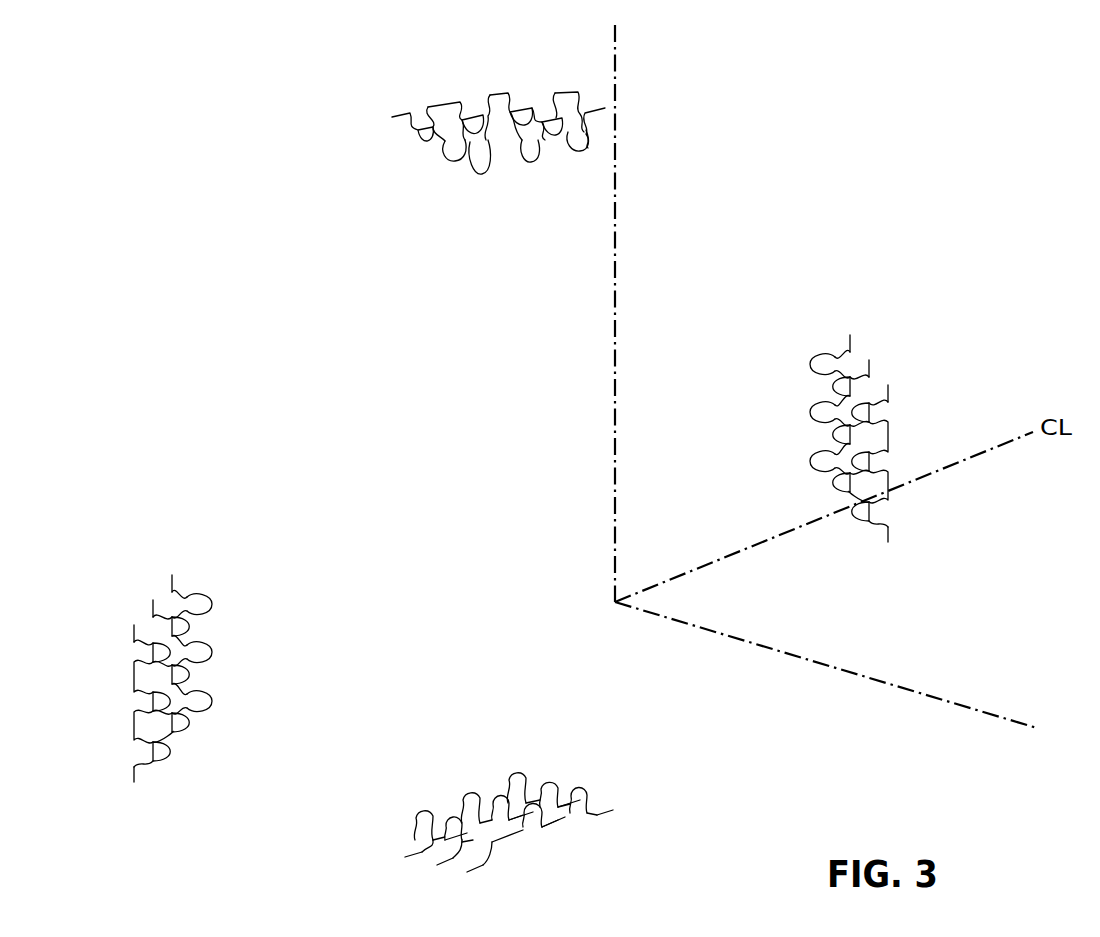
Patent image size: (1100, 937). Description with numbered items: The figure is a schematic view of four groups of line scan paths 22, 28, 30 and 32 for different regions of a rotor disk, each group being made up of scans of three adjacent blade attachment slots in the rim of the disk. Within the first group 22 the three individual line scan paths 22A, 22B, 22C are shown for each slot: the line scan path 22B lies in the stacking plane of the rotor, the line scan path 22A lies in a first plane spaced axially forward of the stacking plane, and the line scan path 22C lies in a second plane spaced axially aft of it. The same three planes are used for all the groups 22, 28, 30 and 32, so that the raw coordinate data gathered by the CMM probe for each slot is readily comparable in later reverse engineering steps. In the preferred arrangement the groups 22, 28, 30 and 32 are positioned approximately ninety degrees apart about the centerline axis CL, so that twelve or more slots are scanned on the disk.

The group of line scan paths 22 is at (378, 73).
The line scan path 22A is at (446, 103).
The line scan path 22B is at (522, 105).
The line scan path 22C is at (452, 157).
The group of line scan paths 28 is at (122, 578).
The group of line scan paths 30 is at (620, 753).
The group of line scan paths 32 is at (897, 328).